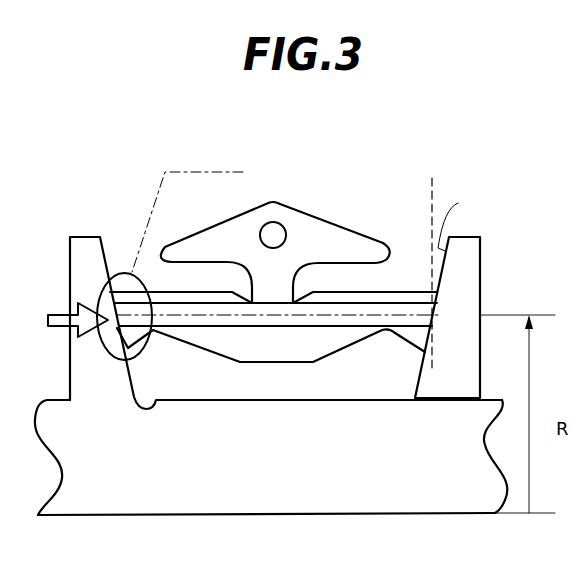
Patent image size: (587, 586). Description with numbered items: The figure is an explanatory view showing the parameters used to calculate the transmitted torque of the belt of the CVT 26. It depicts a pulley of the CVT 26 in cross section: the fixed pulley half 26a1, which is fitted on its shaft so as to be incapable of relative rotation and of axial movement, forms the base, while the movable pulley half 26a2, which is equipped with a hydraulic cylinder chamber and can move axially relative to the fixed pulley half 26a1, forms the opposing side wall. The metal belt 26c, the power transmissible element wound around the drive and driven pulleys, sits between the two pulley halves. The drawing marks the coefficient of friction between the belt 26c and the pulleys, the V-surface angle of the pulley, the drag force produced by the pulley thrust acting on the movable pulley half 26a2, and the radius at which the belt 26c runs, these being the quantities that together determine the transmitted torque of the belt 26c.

The CVT 26 is at (86, 198).
The metal belt 26c is at (314, 209).
The movable pulley half 26a2 is at (477, 237).
The fixed pulley half 26a1 is at (197, 502).